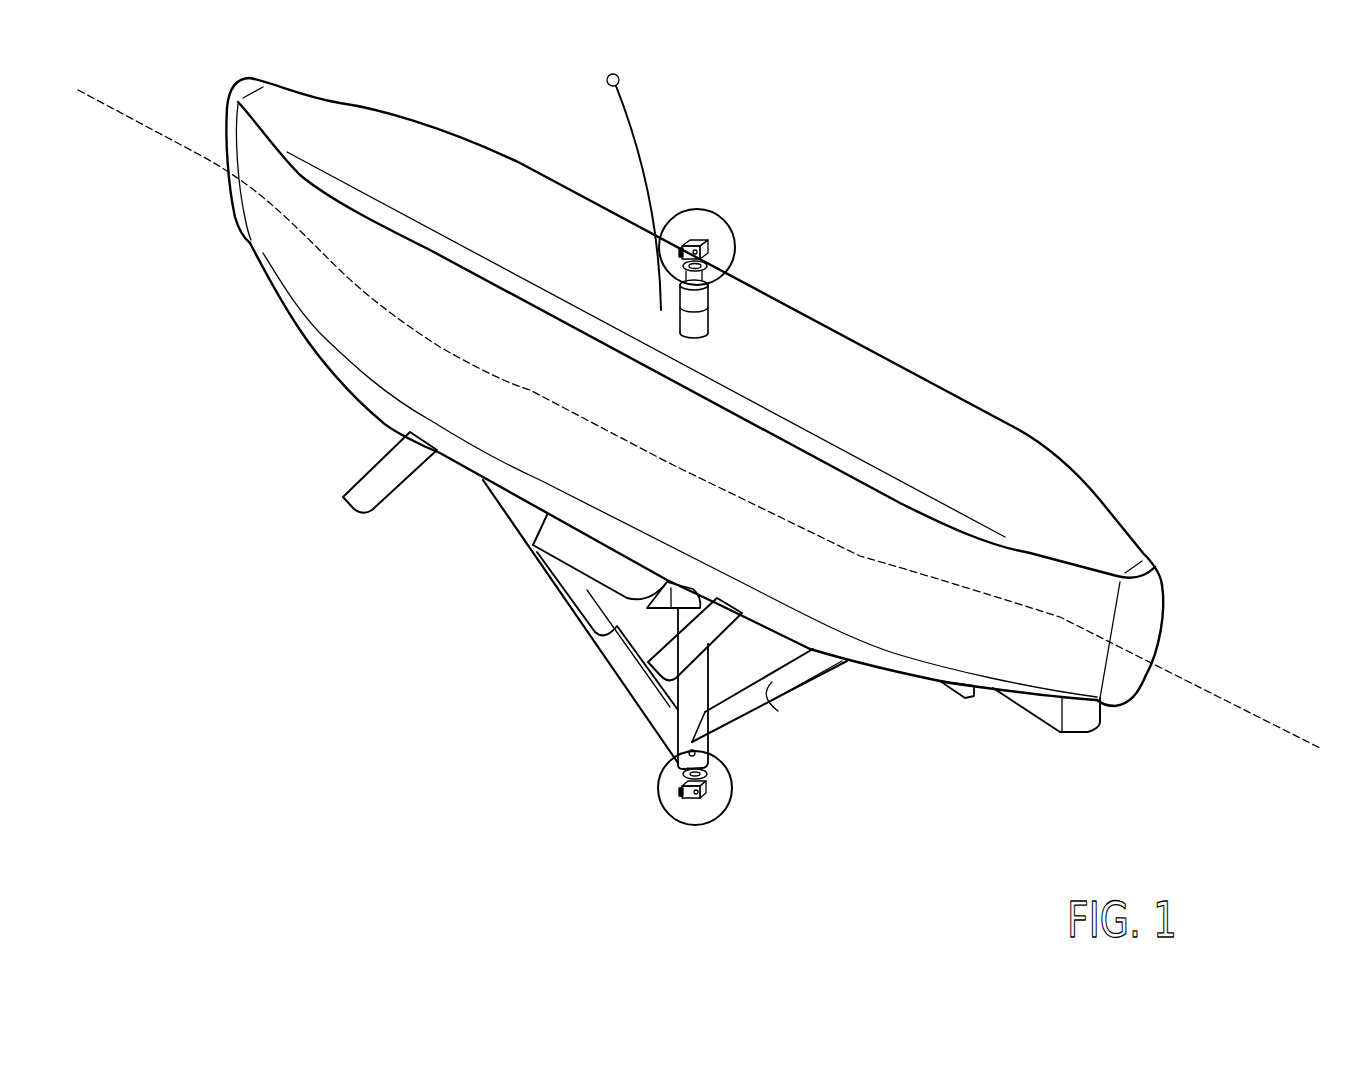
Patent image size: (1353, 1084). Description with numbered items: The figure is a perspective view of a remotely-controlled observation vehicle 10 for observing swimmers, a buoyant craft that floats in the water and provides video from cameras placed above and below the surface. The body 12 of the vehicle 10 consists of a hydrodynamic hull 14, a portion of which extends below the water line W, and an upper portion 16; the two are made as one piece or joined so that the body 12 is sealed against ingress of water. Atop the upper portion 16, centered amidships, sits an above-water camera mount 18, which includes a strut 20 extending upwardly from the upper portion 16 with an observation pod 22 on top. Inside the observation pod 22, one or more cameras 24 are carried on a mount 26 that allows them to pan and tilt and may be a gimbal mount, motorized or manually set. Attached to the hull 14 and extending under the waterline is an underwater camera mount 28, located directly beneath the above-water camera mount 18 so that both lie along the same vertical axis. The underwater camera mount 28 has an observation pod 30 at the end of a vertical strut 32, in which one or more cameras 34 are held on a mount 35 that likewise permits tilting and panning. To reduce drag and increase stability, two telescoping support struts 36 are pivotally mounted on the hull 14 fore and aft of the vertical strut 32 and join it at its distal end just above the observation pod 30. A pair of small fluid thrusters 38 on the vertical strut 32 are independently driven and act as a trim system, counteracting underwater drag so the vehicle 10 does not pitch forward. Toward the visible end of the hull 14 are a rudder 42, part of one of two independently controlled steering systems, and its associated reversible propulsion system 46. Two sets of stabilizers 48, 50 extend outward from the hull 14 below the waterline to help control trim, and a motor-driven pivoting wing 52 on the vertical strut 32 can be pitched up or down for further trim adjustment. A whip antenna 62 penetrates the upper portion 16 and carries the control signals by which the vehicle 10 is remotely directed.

The remotely-controlled observation vehicle 10 is at (868, 257).
The body 12 is at (1015, 421).
The hydrodynamic hull 14 is at (917, 646).
The upper portion 16 is at (418, 137).
The above-water camera mount 18 is at (703, 214).
The strut 20 is at (700, 325).
The observation pod 22 is at (715, 230).
The cameras 24 is at (707, 250).
The mount 26 is at (705, 262).
The underwater camera mount 28 is at (600, 667).
The observation pod 30 is at (667, 793).
The vertical strut 32 is at (703, 672).
The cameras 34 is at (708, 793).
The mount 35 is at (704, 772).
The telescoping support struts 36 is at (641, 690).
The fluid thrusters 38 is at (680, 593).
The rudder 42 is at (967, 698).
The propulsion system 46 is at (1040, 709).
The stabilizers 48 is at (412, 450).
The stabilizers 50 is at (719, 615).
The pivoting wing 52 is at (593, 556).
The whip antenna 62 is at (637, 132).